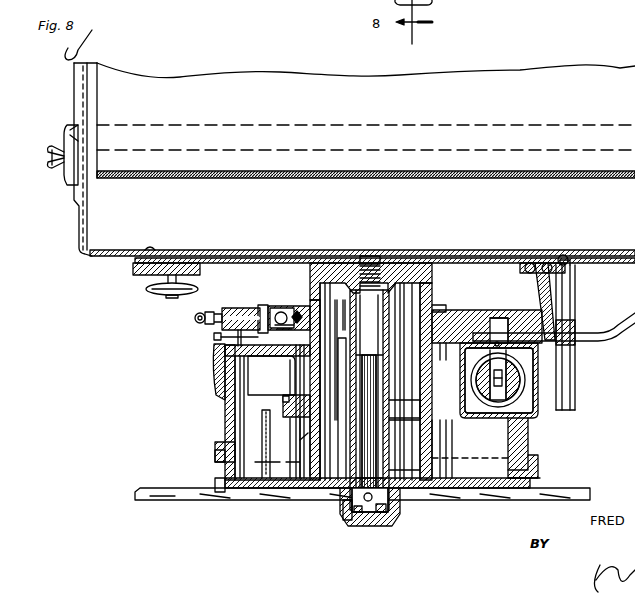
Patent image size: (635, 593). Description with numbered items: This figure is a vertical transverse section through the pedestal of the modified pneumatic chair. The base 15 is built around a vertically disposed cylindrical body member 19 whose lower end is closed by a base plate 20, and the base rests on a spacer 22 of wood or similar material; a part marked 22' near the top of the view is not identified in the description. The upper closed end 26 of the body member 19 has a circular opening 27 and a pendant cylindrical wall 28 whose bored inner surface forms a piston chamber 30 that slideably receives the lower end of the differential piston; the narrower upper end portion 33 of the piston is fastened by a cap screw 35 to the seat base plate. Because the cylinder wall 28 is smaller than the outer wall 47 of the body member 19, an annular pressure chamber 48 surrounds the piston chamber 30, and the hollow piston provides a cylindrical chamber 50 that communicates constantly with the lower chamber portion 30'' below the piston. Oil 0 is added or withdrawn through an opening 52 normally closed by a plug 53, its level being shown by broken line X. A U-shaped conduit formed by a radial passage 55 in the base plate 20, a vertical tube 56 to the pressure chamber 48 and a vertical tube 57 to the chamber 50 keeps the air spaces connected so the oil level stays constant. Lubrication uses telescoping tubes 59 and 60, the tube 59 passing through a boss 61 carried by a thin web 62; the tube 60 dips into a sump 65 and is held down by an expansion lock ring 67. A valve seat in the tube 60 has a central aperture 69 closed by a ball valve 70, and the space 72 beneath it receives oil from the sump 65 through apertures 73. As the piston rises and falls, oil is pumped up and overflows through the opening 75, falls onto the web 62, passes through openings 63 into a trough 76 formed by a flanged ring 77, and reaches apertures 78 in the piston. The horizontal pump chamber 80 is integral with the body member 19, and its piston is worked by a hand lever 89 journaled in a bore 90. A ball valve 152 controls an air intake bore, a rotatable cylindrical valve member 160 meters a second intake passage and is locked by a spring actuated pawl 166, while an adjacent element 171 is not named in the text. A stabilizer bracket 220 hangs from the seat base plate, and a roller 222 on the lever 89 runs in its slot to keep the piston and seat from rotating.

The tank 22' is at (354, 128).
The plug 53 is at (454, 0).
The hose fitting 171 is at (196, 318).
The ball valve 152 is at (283, 312).
The cylindrical body member 19 is at (227, 385).
The annular pressure chamber 48 is at (256, 361).
The piston chamber 30 is at (368, 419).
The trough 76 is at (283, 402).
The cylindrical valve member 160 is at (214, 338).
The spring actuated pawl 166 is at (214, 360).
The vertical tube 56 is at (256, 462).
The oil level line X is at (271, 462).
The radial passage 55 is at (289, 462).
The apertures 78 is at (310, 447).
The flanged ring 77 is at (309, 446).
The opening 52 is at (226, 443).
The base plate 20 is at (215, 478).
The upper end portion of piston 33 is at (432, 322).
The cap screw 35 is at (367, 262).
The tube 59 is at (384, 320).
The cylindrical chamber 50 is at (384, 402).
The opening 75 is at (342, 311).
The openings 63 is at (340, 340).
The boss 61 is at (386, 375).
The web 62 is at (388, 418).
The lower portion of piston chamber 30'' is at (405, 436).
The tube 60 is at (387, 468).
The ball valve 70 is at (384, 492).
The vertical tube 57 is at (336, 436).
The spacer 22 is at (374, 490).
The sump 65 is at (396, 503).
The central aperture 69 is at (366, 510).
The expansion lock ring 67 is at (354, 508).
The space 72 is at (378, 510).
The apertures 73 is at (346, 508).
The circular opening 27 is at (450, 330).
The upper closed end 26 is at (472, 330).
The bore 90 is at (510, 345).
The stabilizer bracket 220 is at (590, 289).
The roller 222 is at (572, 325).
The hand lever 89 is at (503, 356).
The pump chamber 80 is at (530, 405).
The outer wall 47 is at (524, 438).
The pendant cylindrical wall 28 is at (452, 455).
The base 15 is at (525, 492).
The oil 0 is at (473, 474).